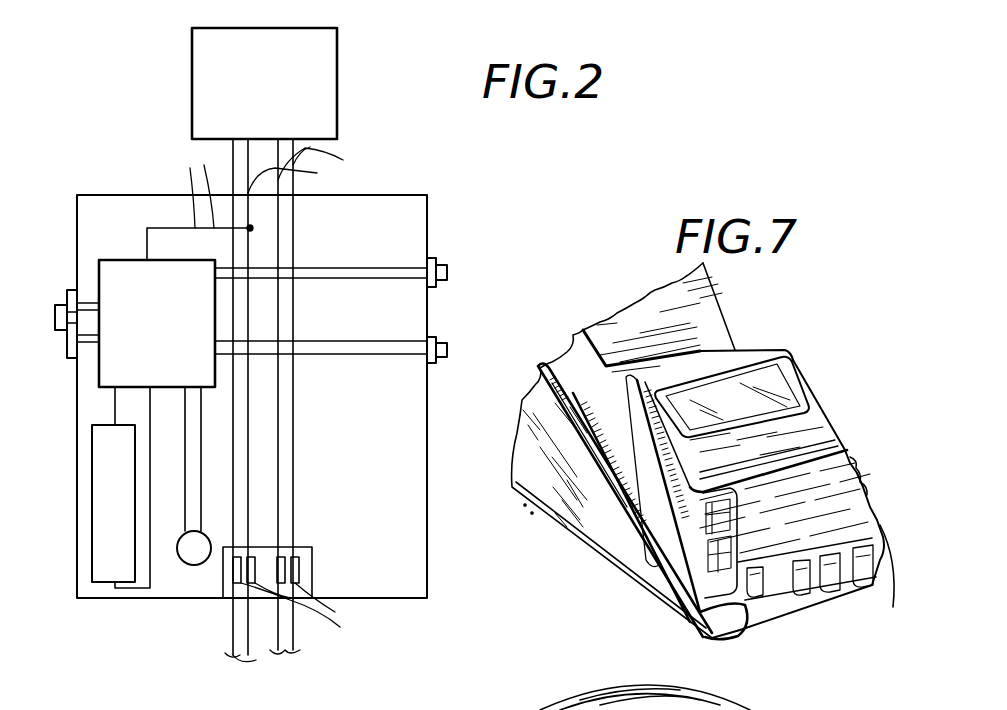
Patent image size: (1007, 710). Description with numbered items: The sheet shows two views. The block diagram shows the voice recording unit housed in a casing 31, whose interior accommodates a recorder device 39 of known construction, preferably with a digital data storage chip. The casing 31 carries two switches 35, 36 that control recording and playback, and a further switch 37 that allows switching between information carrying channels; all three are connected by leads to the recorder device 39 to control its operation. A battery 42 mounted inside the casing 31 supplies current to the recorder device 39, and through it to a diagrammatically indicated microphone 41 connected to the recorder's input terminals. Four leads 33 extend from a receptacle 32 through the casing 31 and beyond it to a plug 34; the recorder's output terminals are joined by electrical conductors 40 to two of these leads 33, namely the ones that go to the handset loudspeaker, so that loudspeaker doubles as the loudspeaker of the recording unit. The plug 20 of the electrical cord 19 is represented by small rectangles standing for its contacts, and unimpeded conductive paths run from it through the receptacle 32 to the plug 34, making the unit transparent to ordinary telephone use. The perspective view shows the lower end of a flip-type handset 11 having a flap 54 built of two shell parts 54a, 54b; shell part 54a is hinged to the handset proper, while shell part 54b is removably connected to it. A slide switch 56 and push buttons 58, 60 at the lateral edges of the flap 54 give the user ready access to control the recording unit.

In FIG. 2, the plug 34 is at (322, 46).
In FIG. 2, the leads 33 is at (343, 160).
In FIG. 2, the electrical conductors 40 is at (190, 168).
In FIG. 2, the recorder device 39 is at (122, 277).
In FIG. 2, the switch 37 is at (57, 320).
In FIG. 2, the switch 35 is at (438, 287).
In FIG. 2, the switch 36 is at (438, 363).
In FIG. 2, the casing 31 is at (427, 455).
In FIG. 2, the receptacle 32 is at (313, 558).
In FIG. 2, the battery 42 is at (97, 470).
In FIG. 2, the microphone 41 is at (192, 552).
In FIG. 2, the electrical cord 19 is at (245, 652).
In FIG. 2, the plug 20 is at (304, 625).
In FIG. 7, the handset 11 is at (812, 342).
In FIG. 7, the flap 54 is at (861, 439).
In FIG. 7, the shell part 54a is at (697, 473).
In FIG. 7, the shell part 54b is at (817, 533).
In FIG. 7, the slide switch 56 is at (687, 577).
In FIG. 7, the push button 58 is at (860, 477).
In FIG. 7, the push button 60 is at (878, 507).